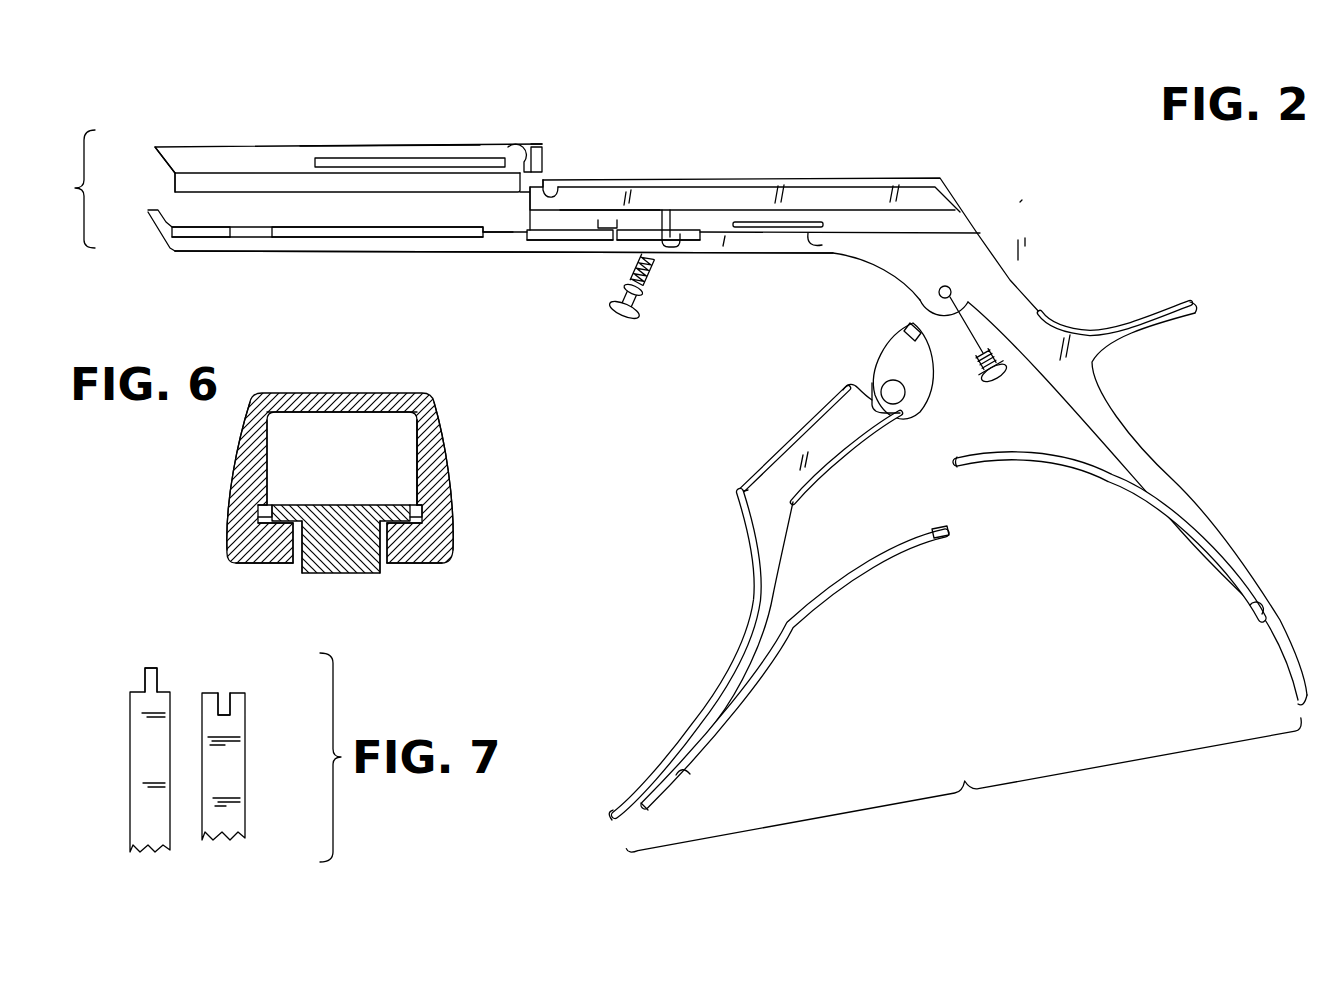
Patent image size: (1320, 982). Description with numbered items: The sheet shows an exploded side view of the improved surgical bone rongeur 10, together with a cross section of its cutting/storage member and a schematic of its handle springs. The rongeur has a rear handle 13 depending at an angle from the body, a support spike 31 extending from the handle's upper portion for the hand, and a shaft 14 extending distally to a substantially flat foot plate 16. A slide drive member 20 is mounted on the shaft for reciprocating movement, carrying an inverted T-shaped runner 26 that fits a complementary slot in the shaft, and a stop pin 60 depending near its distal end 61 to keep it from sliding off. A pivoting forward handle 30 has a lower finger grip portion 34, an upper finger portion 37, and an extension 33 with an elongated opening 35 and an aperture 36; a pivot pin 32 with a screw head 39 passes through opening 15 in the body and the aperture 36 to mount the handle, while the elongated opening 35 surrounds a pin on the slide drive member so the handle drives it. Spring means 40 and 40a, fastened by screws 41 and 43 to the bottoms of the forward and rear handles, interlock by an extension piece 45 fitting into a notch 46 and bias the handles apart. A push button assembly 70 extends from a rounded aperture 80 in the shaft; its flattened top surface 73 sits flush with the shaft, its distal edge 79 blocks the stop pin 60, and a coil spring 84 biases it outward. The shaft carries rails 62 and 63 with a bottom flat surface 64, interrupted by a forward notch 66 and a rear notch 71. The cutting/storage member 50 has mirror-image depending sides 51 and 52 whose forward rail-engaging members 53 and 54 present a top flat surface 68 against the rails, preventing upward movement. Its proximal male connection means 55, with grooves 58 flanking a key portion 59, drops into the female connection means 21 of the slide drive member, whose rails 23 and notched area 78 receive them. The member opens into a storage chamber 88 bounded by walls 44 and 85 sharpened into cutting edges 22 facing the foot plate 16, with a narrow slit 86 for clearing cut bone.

In FIG. 2, the surgical bone rongeur 10 is at (1022, 200).
In FIG. 2, the rear handle 13 is at (1127, 427).
In FIG. 2, the shaft 14 is at (738, 258).
In FIG. 6, the shaft 14 is at (334, 574).
In FIG. 2, the opening 15 is at (955, 290).
In FIG. 2, the foot plate 16 is at (150, 215).
In FIG. 2, the slide drive member 20 is at (832, 180).
In FIG. 2, the female connection means 21 is at (521, 222).
In FIG. 2, the cutting edges 22 is at (152, 148).
In FIG. 2, the rails 23 is at (522, 200).
In FIG. 2, the inverted T-shaped runner 26 is at (820, 236).
In FIG. 2, the forward handle 30 is at (740, 490).
In FIG. 2, the support spike 31 is at (1195, 301).
In FIG. 2, the pivot pin 32 is at (970, 405).
In FIG. 2, the extension 33 is at (884, 348).
In FIG. 2, the lower finger grip portion 34 is at (737, 657).
In FIG. 2, the elongated opening 35 is at (915, 322).
In FIG. 2, the aperture 36 is at (897, 402).
In FIG. 2, the upper finger portion 37 is at (822, 418).
In FIG. 2, the screw head 39 is at (1009, 407).
In FIG. 2, the spring means 40 is at (833, 587).
In FIG. 7, the spring means 40 is at (140, 800).
In FIG. 2, the spring means 40a is at (1068, 465).
In FIG. 7, the spring means 40a is at (237, 770).
In FIG. 2, the screw 41 is at (688, 770).
In FIG. 2, the screw 43 is at (1252, 608).
In FIG. 2, the side wall 44 is at (162, 174).
In FIG. 6, the side wall 44 is at (318, 413).
In FIG. 2, the extension piece 45 is at (945, 535).
In FIG. 7, the extension piece 45 is at (147, 690).
In FIG. 7, the notch 46 is at (224, 706).
In FIG. 2, the cutting/storage member 50 is at (428, 143).
In FIG. 6, the cutting/storage member 50 is at (324, 393).
In FIG. 6, the depending side 51 is at (453, 472).
In FIG. 2, the depending side 52 is at (245, 178).
In FIG. 6, the depending side 52 is at (236, 447).
In FIG. 6, the forward rail-engaging member 53 is at (432, 564).
In FIG. 6, the forward rail-engaging member 54 is at (247, 565).
In FIG. 2, the male connection means 55 is at (548, 138).
In FIG. 2, the grooves 58 is at (520, 155).
In FIG. 2, the key portion 59 is at (545, 150).
In FIG. 2, the stop pin 60 is at (620, 212).
In FIG. 2, the distal end 61 is at (550, 230).
In FIG. 2, the rail 62 is at (185, 224).
In FIG. 6, the rail 62 is at (262, 512).
In FIG. 6, the rail 63 is at (412, 515).
In FIG. 2, the bottom flat surface 64 is at (200, 240).
In FIG. 6, the bottom flat surface 64 is at (298, 566).
In FIG. 2, the forward notch 66 is at (250, 238).
In FIG. 6, the top flat surface 68 is at (258, 520).
In FIG. 2, the push button assembly 70 is at (623, 346).
In FIG. 2, the rear notch 71 is at (475, 253).
In FIG. 2, the flattened top surface 73 is at (669, 320).
In FIG. 2, the notched area 78 is at (556, 186).
In FIG. 2, the distal edge 79 is at (666, 337).
In FIG. 2, the rounded aperture 80 is at (672, 232).
In FIG. 2, the coil spring 84 is at (673, 290).
In FIG. 6, the side wall 85 is at (267, 462).
In FIG. 2, the narrow slit 86 is at (365, 160).
In FIG. 2, the storage chamber 88 is at (195, 158).
In FIG. 6, the storage chamber 88 is at (395, 453).